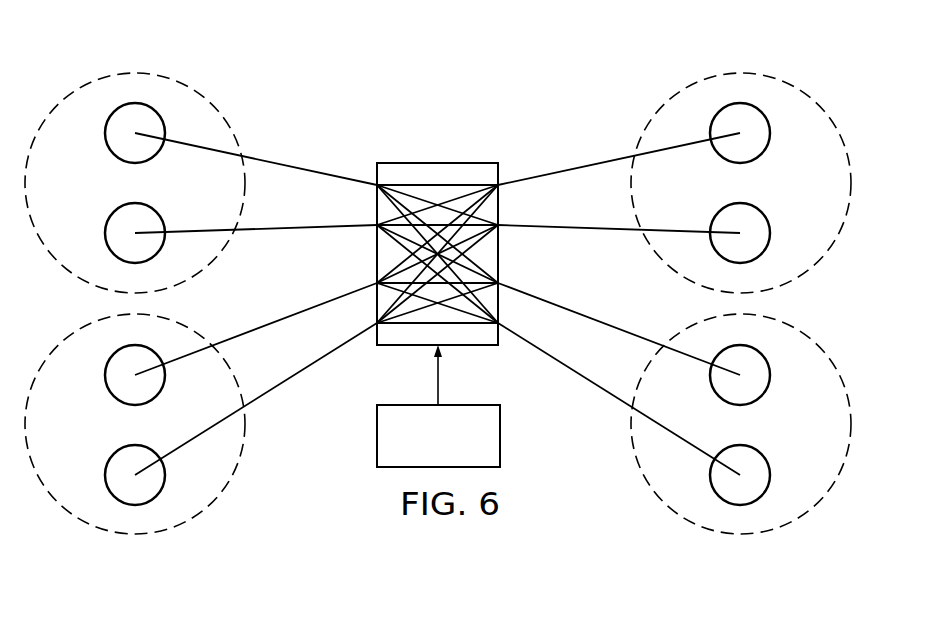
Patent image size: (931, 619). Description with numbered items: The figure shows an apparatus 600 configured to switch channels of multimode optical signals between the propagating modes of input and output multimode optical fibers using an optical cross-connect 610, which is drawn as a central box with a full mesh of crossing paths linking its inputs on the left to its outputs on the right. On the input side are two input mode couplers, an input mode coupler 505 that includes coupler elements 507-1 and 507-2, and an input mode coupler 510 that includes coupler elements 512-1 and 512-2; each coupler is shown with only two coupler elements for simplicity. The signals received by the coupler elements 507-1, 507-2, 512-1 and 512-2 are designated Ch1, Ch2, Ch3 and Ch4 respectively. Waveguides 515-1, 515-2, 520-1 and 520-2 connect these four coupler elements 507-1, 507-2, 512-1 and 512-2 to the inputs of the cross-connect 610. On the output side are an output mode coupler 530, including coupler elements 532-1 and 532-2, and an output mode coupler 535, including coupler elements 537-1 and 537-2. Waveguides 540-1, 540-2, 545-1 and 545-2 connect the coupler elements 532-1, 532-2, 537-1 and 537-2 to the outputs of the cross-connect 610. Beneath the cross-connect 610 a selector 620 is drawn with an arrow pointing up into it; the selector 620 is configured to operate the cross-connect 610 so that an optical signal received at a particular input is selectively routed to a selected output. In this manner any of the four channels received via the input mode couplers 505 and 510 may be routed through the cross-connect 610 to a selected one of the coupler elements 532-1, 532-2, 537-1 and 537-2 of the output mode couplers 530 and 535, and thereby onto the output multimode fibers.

The apparatus 600 is at (342, 75).
The input mode coupler 505 is at (107, 72).
The input mode coupler 510 is at (127, 535).
The output mode coupler 530 is at (763, 72).
The output mode coupler 535 is at (755, 535).
The coupler element 507-1 is at (113, 153).
The coupler element 507-2 is at (157, 212).
The coupler element 512-1 is at (113, 397).
The coupler element 512-2 is at (156, 453).
The coupler element 532-1 is at (718, 154).
The coupler element 532-2 is at (766, 213).
The coupler element 537-1 is at (762, 397).
The coupler element 537-2 is at (719, 453).
The optical cross-connect 610 is at (448, 163).
The selector 620 is at (418, 449).
The waveguide 515-1 is at (300, 167).
The waveguide 515-2 is at (298, 225).
The waveguide 520-1 is at (305, 311).
The waveguide 520-2 is at (300, 373).
The waveguide 540-1 is at (573, 168).
The waveguide 540-2 is at (570, 224).
The waveguide 545-1 is at (573, 310).
The waveguide 545-2 is at (575, 373).